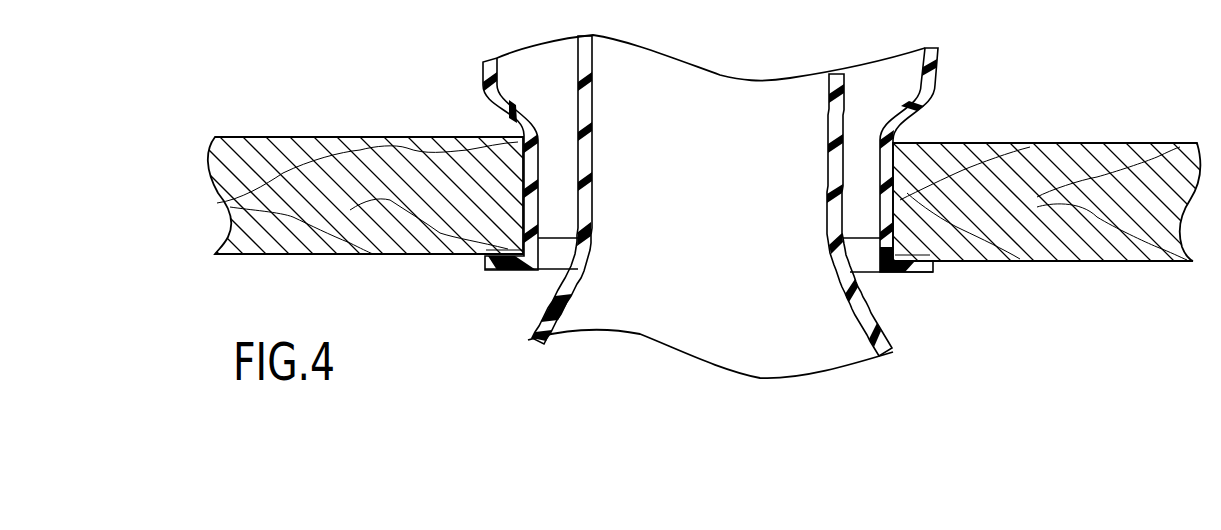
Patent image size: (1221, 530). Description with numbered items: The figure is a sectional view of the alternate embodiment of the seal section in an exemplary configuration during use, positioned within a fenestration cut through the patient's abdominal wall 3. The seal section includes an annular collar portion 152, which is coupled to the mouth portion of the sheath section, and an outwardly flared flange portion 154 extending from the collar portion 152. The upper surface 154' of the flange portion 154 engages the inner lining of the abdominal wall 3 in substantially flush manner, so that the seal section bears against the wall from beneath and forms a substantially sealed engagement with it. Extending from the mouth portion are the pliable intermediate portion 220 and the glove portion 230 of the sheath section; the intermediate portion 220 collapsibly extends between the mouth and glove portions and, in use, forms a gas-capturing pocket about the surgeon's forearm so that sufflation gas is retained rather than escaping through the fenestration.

The abdominal wall 3 is at (1042, 157).
The intermediate portion 220 is at (488, 100).
The glove portion 230 is at (580, 270).
The annular collar portion 152 is at (860, 262).
The flange portion 154 is at (709, 292).
The upper surface 154' is at (709, 223).